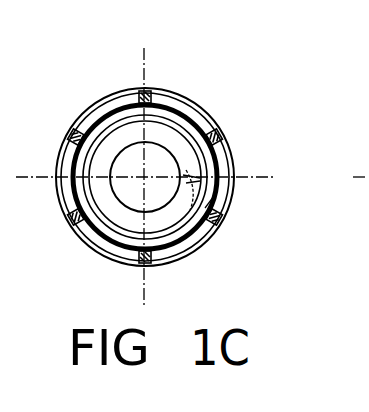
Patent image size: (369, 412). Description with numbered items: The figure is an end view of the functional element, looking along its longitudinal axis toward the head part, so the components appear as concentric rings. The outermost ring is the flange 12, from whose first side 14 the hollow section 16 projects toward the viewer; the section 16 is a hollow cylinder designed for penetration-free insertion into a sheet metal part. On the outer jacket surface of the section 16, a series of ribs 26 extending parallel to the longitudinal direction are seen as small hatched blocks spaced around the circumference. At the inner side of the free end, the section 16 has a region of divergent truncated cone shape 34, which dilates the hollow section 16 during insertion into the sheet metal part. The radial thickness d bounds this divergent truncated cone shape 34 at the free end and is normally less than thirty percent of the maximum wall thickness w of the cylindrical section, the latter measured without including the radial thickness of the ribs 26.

The flange 12 is at (183, 101).
The first side of the flange 14 is at (223, 165).
The section 16 is at (103, 243).
The ribs 26 is at (215, 133).
The divergent truncated cone shape 34 is at (193, 240).
The radial thickness d is at (233, 183).
The maximum wall thickness w is at (225, 210).